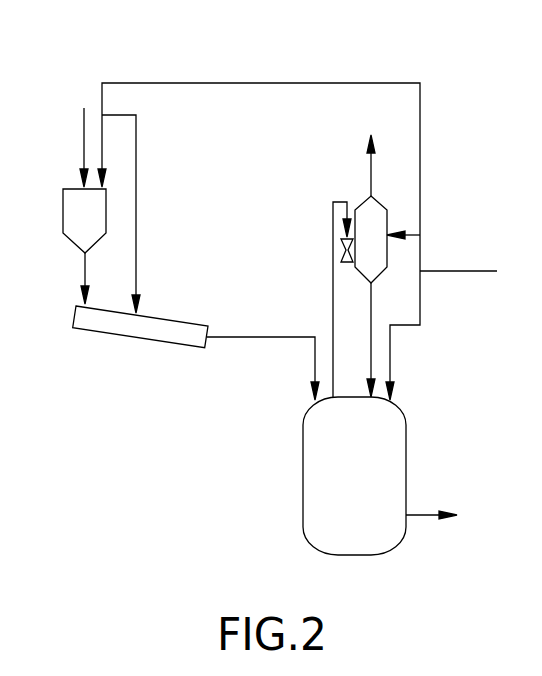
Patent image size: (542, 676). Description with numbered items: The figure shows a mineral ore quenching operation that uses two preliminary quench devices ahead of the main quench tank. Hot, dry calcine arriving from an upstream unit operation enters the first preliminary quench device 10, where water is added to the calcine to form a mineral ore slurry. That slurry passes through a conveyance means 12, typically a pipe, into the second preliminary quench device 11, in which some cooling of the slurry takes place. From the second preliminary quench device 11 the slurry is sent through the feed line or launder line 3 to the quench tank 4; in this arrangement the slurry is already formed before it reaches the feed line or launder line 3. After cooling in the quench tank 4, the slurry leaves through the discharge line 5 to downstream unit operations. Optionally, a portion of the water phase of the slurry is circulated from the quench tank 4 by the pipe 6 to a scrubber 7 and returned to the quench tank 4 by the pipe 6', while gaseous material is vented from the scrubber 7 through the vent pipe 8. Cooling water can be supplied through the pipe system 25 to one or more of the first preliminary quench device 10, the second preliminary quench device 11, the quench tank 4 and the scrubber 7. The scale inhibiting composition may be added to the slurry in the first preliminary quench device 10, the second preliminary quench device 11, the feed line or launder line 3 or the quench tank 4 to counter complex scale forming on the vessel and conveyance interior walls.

The pipe system 25 is at (268, 83).
The first preliminary quench device 10 is at (63, 196).
The means to convey mineral ore slurry 12 is at (83, 267).
The second preliminary quench device 11 is at (148, 340).
The feed line or launder line 3 is at (315, 362).
The pipe 6 is at (310, 299).
The scrubber 7 is at (380, 200).
The vent pipe 8 is at (370, 177).
The pipe 6' is at (389, 338).
The quench tank 4 is at (303, 476).
The discharge line 5 is at (423, 515).